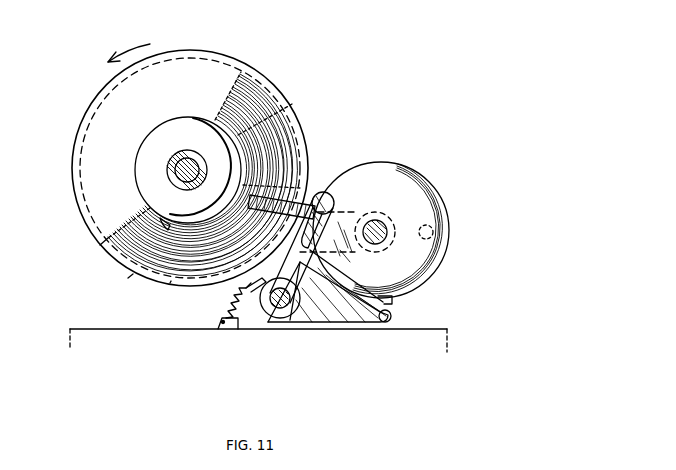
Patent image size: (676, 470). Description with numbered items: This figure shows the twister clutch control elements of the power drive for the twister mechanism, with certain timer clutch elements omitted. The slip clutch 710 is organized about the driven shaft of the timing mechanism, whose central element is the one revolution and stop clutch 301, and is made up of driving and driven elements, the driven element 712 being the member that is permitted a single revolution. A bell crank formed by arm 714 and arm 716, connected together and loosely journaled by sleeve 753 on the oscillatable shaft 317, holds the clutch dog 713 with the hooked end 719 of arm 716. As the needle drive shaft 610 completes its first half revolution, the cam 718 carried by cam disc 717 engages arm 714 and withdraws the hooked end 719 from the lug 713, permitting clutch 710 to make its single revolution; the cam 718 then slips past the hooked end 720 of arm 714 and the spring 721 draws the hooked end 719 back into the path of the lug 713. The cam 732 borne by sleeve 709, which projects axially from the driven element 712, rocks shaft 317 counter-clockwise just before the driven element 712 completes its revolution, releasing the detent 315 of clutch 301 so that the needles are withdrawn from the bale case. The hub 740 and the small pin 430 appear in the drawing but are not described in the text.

The one revolution and stop clutch 301 is at (222, 65).
The slip clutch 710 is at (178, 106).
The driven element 712 is at (282, 94).
The reel hub 740 is at (172, 172).
The sleeve 709 is at (101, 244).
The cam 732 is at (130, 277).
The clutch controlling detent 315 is at (170, 284).
The spring 721 is at (225, 317).
The oscillatable shaft 317 is at (270, 315).
The sleeve 753 is at (280, 318).
The arm of bell crank 716 is at (322, 322).
The arm of bell crank 714 is at (364, 322).
The hooked end 720 is at (389, 322).
The hooked end 719 is at (333, 200).
The clutch dog 713 is at (303, 193).
The cam disc 717 is at (412, 274).
The needle drive shaft 610 is at (381, 228).
The pin 430 is at (424, 210).
The cam 718 is at (388, 302).